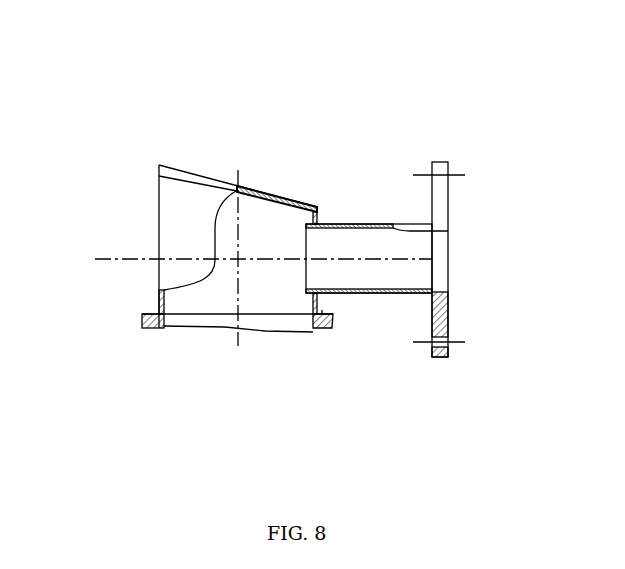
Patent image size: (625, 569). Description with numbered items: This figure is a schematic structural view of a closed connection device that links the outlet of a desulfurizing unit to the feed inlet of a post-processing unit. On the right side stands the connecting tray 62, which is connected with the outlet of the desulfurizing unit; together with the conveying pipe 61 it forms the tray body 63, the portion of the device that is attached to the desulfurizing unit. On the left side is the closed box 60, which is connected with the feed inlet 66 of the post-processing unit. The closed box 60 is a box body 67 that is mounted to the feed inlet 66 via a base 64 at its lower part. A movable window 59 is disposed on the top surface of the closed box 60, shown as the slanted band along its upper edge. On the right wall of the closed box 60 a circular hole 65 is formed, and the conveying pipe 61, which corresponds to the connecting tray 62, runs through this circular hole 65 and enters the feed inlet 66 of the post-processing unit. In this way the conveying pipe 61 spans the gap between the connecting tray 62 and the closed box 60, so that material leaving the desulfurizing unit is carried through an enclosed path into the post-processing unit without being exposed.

The movable window 59 is at (150, 56).
The closed box 60 is at (278, 247).
The conveying pipe 61 is at (368, 224).
The connecting tray 62 is at (437, 252).
The tray body 63 is at (382, 267).
The base 64 is at (323, 316).
The circular hole 65 is at (315, 300).
The feed inlet 66 is at (187, 320).
The box body 67 is at (176, 213).